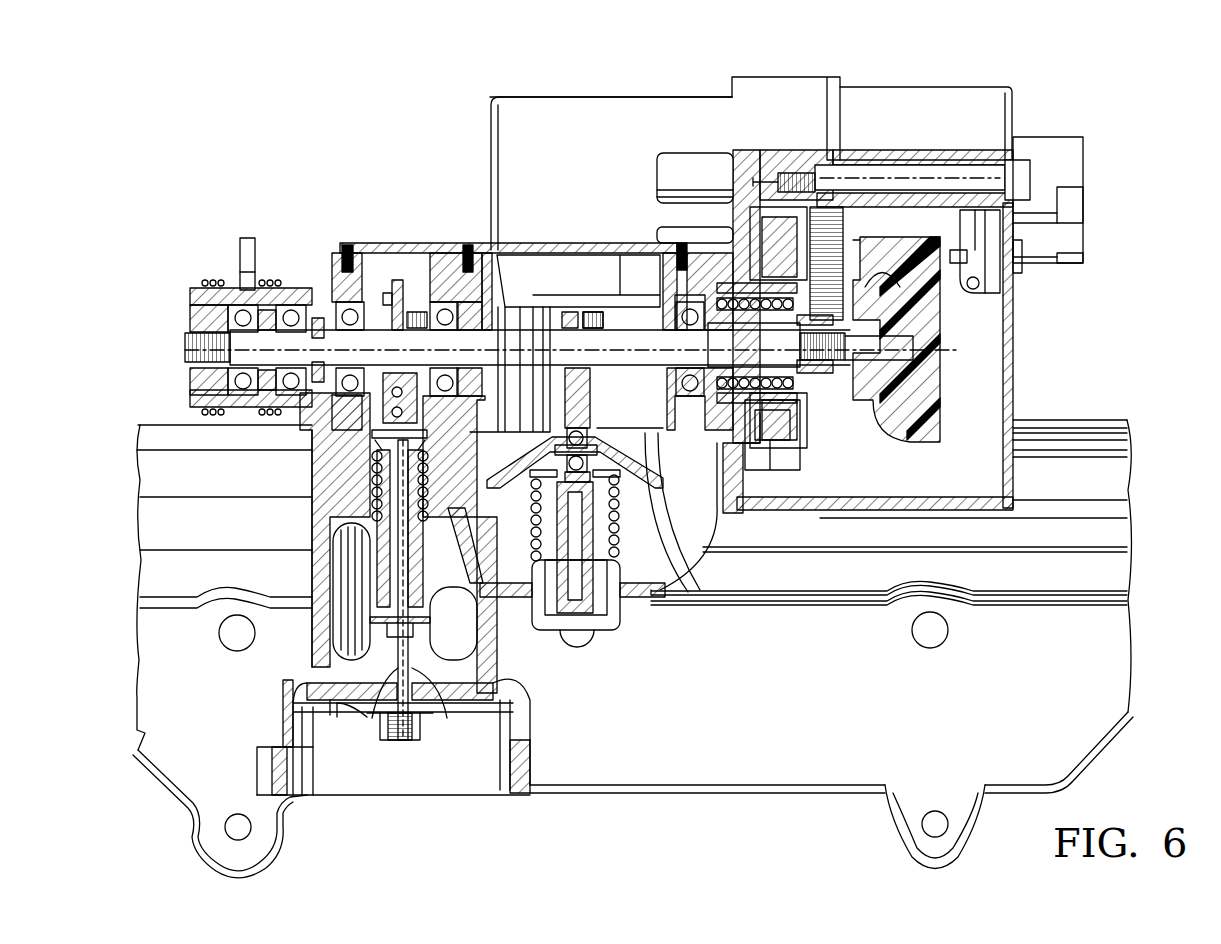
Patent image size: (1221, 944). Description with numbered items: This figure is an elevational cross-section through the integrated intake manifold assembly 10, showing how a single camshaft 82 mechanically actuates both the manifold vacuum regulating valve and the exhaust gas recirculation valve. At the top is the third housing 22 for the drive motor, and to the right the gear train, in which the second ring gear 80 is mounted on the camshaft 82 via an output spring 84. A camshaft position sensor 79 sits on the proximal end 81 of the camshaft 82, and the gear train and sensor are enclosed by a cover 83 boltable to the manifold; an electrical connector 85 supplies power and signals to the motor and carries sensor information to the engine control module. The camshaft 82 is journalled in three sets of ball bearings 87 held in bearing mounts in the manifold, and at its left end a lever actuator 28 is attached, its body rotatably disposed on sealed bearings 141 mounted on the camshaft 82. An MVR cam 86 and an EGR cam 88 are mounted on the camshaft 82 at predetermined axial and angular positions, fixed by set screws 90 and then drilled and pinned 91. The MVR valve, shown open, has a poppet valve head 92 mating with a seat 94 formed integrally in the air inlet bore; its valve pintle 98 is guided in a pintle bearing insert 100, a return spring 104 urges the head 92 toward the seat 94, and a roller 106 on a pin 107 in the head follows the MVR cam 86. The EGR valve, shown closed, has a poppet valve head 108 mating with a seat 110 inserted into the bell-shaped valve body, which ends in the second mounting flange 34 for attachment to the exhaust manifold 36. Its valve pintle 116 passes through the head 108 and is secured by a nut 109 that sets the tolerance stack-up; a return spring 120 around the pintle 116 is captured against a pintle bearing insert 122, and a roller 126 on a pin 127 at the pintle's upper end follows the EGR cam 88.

The integrated intake manifold assembly 10 is at (1037, 97).
The third housing 22 is at (518, 95).
The lever actuator 28 is at (247, 245).
The second mounting flange 34 is at (525, 767).
The exhaust manifold 36 is at (499, 824).
The camshaft position sensor 79 is at (935, 386).
The second ring gear 80 is at (792, 472).
The proximal end 81 is at (920, 338).
The camshaft 82 is at (250, 343).
The cover 83 is at (1038, 303).
The output spring 84 is at (772, 182).
The electrical connector 85 is at (1085, 175).
The MVR cam 86 is at (590, 312).
The ball bearings 87 is at (347, 307).
The EGR cam 88 is at (395, 292).
The set screws 90 is at (388, 293).
The pin 91 is at (414, 312).
The poppet valve head 92 is at (672, 567).
The seat 94 is at (692, 470).
The valve pintle 98 is at (577, 612).
The pintle bearing insert 100 is at (618, 522).
The return spring 104 is at (652, 450).
The roller 106 is at (596, 458).
The pin 107 is at (560, 430).
The poppet valve head 108 is at (340, 700).
The nut 109 is at (402, 718).
The seat 110 is at (333, 713).
The valve pintle 116 is at (453, 702).
The return spring 120 is at (352, 500).
The pintle bearing insert 122 is at (383, 582).
The roller 126 is at (372, 442).
The pin 127 is at (378, 410).
The sealed bearings 141 is at (282, 310).